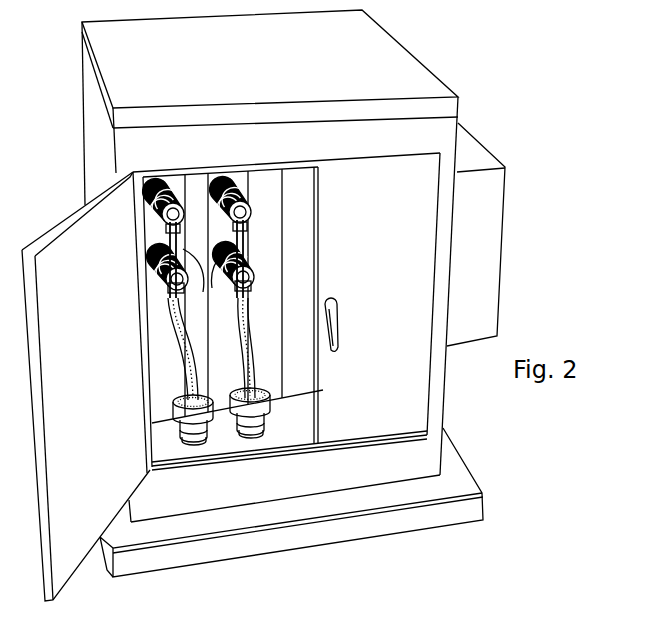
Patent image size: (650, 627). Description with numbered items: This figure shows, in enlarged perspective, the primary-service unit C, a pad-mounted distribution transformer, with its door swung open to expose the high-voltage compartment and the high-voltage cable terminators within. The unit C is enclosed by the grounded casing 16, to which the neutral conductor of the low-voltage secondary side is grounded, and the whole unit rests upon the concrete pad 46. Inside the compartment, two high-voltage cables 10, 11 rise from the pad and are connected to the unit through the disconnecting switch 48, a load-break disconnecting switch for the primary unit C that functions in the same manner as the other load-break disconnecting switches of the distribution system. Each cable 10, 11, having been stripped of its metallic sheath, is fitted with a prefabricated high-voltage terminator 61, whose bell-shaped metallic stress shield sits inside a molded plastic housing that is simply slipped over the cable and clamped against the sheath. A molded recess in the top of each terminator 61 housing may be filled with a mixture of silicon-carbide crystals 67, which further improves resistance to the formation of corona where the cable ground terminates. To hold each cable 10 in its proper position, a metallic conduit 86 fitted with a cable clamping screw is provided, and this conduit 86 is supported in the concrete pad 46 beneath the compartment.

The primary-service unit C is at (396, 41).
The high-voltage cable 10 is at (177, 315).
The high-voltage cable 11 is at (246, 299).
The grounded casing 16 is at (418, 391).
The concrete pad 46 is at (222, 443).
The disconnecting switch 48 is at (198, 243).
The prefabricated high-voltage terminator 61 is at (177, 394).
The silicon-carbide crystals 67 is at (208, 396).
The metallic conduit 86 is at (197, 443).